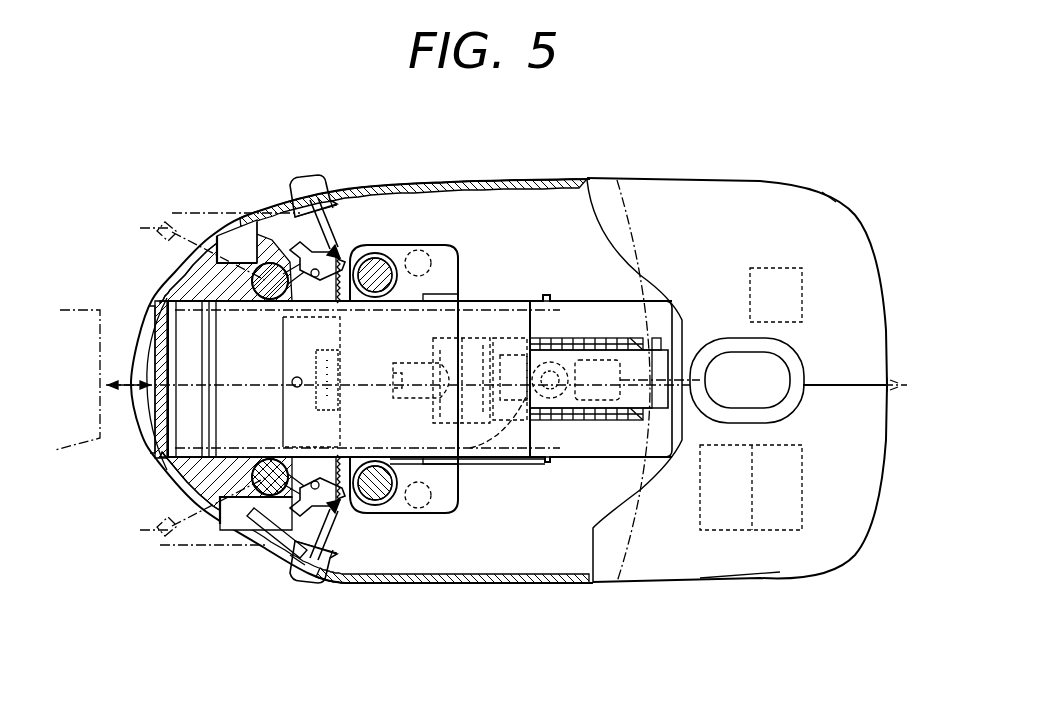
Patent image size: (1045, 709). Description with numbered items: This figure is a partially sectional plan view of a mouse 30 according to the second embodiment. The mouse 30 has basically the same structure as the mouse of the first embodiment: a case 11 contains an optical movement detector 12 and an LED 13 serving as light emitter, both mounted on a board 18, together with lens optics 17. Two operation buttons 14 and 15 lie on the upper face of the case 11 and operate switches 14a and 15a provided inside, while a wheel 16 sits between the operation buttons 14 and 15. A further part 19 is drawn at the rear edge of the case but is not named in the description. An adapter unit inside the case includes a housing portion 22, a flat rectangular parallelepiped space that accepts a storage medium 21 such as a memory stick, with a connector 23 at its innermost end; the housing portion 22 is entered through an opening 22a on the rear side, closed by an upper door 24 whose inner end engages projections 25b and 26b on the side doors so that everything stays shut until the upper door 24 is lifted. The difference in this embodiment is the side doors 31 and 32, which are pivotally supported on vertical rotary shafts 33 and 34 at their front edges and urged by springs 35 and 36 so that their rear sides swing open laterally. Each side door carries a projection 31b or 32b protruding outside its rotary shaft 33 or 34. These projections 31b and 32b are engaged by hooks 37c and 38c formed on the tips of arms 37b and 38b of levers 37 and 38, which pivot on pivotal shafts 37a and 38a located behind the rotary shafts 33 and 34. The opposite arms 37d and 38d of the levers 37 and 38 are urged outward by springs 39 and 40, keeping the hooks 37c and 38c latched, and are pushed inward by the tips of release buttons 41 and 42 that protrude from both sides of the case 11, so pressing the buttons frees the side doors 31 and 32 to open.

The case 11 is at (552, 176).
The optical movement detector 12 is at (597, 338).
The LED 13 is at (433, 370).
The operation button 14 is at (830, 207).
The switch 14a is at (752, 285).
The operation button 15 is at (826, 548).
The switch 15a is at (775, 530).
The wheel 16 is at (790, 370).
The lens optics 17 is at (515, 462).
The board 18 is at (580, 457).
The optical axis mark 19 is at (895, 380).
The storage medium 21 is at (80, 310).
The housing portion 22 is at (415, 464).
The opening 22a is at (160, 455).
The connector 23 is at (505, 300).
The upper door 24 is at (155, 415).
The projection 25b is at (140, 228).
The projection 26b is at (170, 520).
The mouse 30 is at (687, 170).
The side door 31 is at (192, 210).
The projection 31b is at (258, 248).
The side door 32 is at (175, 528).
The projection 32b is at (285, 568).
The rotary shaft 33 is at (240, 262).
The rotary shaft 34 is at (250, 522).
The spring 35 is at (237, 301).
The spring 36 is at (240, 452).
The lever 37 is at (340, 240).
The pivotal shaft 37a is at (310, 285).
The arm 37b is at (345, 210).
The hook 37c is at (296, 207).
The arm 37d is at (372, 256).
The lever 38 is at (320, 527).
The pivotal shaft 38a is at (310, 478).
The arm 38b is at (340, 545).
The hook 38c is at (310, 585).
The arm 38d is at (400, 513).
The spring 39 is at (345, 290).
The spring 40 is at (345, 462).
The release button 41 is at (345, 205).
The release button 42 is at (333, 566).